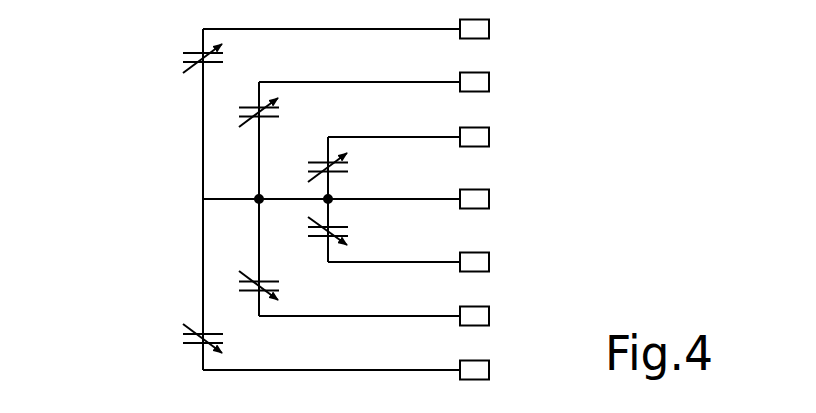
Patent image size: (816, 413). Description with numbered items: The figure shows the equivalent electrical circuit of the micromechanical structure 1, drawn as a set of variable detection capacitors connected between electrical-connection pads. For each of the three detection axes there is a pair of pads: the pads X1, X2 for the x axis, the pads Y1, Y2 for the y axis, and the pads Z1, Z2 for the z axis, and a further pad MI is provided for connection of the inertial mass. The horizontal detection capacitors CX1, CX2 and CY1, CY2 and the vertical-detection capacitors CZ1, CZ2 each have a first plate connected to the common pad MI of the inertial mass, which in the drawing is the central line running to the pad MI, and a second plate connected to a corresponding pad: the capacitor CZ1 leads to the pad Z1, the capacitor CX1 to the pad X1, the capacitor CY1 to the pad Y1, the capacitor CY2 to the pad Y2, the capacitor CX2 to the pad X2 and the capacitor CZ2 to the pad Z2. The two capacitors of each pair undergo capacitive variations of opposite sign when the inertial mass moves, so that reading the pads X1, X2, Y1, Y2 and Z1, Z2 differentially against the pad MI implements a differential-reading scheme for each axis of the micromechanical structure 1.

The micromechanical structure 1 is at (125, 93).
The electrical-connection pad Z1 is at (367, 31).
The electrical-connection pad X1 is at (395, 84).
The electrical-connection pad Y1 is at (428, 139).
The electrical-connection pad MI is at (496, 199).
The electrical-connection pad Y2 is at (428, 264).
The electrical-connection pad X2 is at (395, 318).
The electrical-connection pad Z2 is at (367, 372).
The vertical-detection capacitor CZ1 is at (224, 60).
The horizontal detection capacitor CX1 is at (280, 114).
The horizontal detection capacitor CY1 is at (349, 168).
The horizontal detection capacitor CY2 is at (349, 232).
The horizontal detection capacitor CX2 is at (280, 287).
The vertical-detection capacitor CZ2 is at (225, 340).